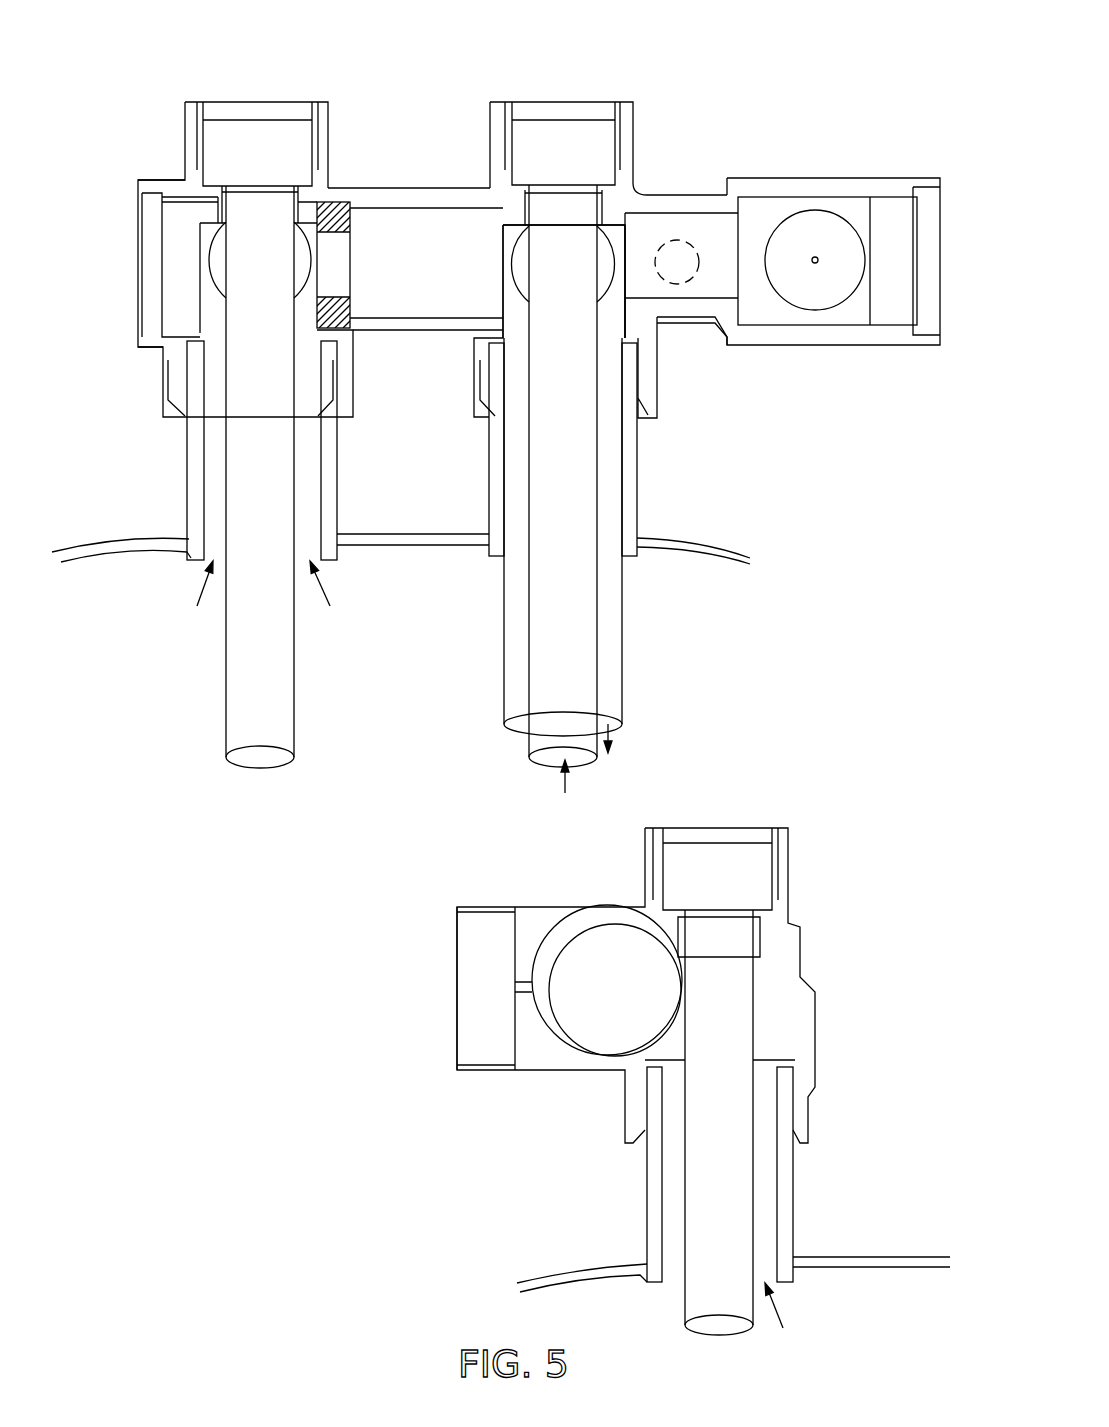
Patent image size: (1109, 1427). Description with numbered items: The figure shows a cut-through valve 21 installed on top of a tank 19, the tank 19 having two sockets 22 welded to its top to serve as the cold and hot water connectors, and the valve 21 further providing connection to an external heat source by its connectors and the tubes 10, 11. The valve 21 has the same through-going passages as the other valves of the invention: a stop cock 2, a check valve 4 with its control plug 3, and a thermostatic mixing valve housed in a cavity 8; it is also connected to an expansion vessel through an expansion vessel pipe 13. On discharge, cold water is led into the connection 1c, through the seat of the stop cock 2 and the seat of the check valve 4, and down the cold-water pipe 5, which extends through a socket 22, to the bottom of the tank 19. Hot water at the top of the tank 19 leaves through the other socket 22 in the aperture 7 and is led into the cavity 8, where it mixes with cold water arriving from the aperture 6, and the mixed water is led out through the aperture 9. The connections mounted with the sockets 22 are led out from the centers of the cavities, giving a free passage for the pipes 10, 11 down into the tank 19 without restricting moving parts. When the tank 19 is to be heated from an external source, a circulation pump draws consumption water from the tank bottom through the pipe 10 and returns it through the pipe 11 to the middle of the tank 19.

The connection 1c is at (816, 257).
The stop cock 2 is at (743, 230).
The control plug 3 is at (677, 255).
The check valve 4 is at (628, 215).
The cold-water pipe 5 is at (622, 652).
The aperture 6 is at (352, 250).
The aperture 7 is at (323, 598).
The cavity 8 is at (188, 278).
The aperture 9 is at (220, 257).
The pipe 10 is at (552, 100).
The pipe 11 is at (262, 100).
The expansion vessel pipe 13 is at (605, 250).
The tank 19 is at (695, 543).
The valve 21 is at (662, 331).
The sockets 22 is at (189, 471).